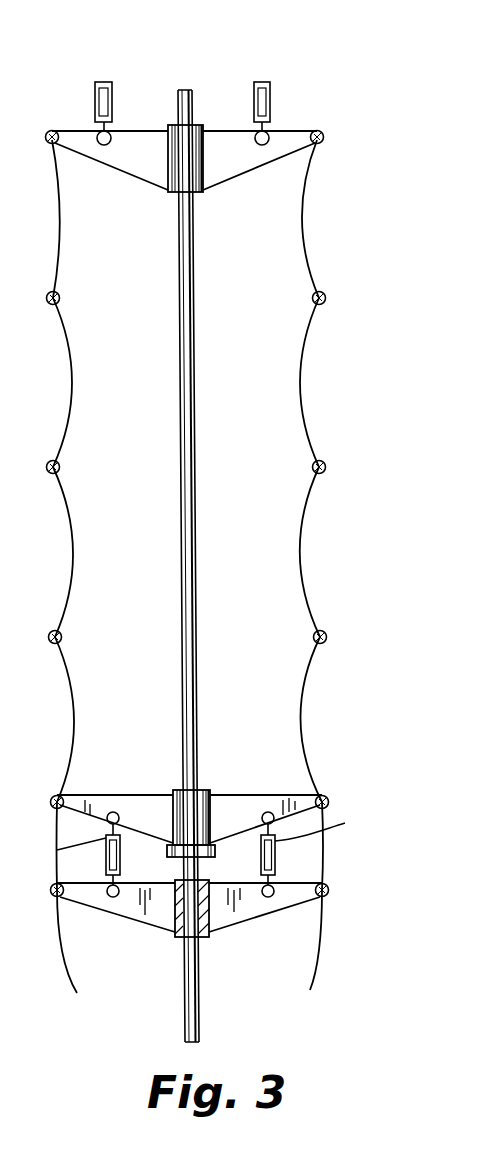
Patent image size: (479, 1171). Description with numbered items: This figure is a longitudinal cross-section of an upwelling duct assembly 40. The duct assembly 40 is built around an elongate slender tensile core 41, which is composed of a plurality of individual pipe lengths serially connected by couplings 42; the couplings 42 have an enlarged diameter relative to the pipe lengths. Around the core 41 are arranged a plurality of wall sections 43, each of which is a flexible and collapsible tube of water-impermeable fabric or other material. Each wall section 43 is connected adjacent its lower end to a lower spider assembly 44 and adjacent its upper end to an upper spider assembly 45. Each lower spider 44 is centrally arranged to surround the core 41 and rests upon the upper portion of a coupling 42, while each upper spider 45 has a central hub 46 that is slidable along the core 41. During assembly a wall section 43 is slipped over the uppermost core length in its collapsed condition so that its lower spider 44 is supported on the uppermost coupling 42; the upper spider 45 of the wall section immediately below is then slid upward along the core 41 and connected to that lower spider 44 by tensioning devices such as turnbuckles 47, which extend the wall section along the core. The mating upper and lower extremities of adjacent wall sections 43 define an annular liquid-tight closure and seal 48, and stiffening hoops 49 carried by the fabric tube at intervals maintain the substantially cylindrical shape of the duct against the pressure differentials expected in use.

The duct assembly 40 is at (197, 533).
The tensile core 41 is at (191, 302).
The coupling 42 is at (215, 855).
The wall section 43 is at (301, 553).
The lower spider assembly 44 is at (222, 795).
The upper spider assembly 45 is at (233, 166).
The central hub 46 is at (173, 193).
The turnbuckle 47 is at (59, 852).
The closure and seal 48 is at (323, 842).
The stiffening hoop 49 is at (324, 296).